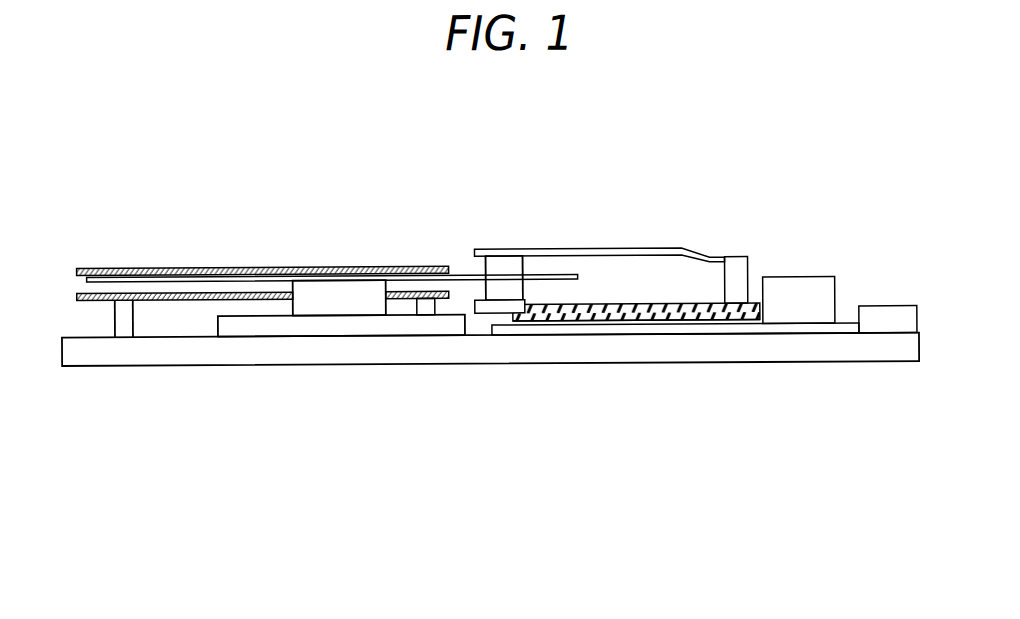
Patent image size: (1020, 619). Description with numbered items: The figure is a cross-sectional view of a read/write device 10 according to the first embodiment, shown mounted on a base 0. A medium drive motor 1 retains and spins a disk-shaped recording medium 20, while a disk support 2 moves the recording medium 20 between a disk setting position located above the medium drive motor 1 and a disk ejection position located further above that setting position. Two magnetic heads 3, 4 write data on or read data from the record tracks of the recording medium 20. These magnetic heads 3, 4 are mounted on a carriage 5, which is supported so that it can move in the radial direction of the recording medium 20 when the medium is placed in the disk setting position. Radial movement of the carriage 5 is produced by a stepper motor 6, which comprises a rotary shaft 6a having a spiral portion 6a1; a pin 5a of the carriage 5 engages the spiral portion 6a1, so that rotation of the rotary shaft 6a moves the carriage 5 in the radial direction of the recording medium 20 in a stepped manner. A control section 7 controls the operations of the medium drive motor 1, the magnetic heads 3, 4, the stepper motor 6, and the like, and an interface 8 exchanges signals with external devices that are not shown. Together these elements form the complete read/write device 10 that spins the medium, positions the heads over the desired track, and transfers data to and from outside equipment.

The magnetic head unit 10 is at (368, 221).
The base plate 0 is at (213, 352).
The medium drive motor 1 is at (362, 327).
The recording medium 20 is at (232, 268).
The disk support 2 is at (302, 266).
The magnetic head 3 is at (513, 292).
The magnetic head 4 is at (505, 265).
The carriage 5 is at (738, 278).
The pin 5a is at (627, 306).
The stepper motor 6 is at (783, 289).
The rotary shaft 6a is at (753, 310).
The spiral portion 6a1 is at (668, 323).
The control section 7 is at (594, 328).
The interface 8 is at (877, 324).